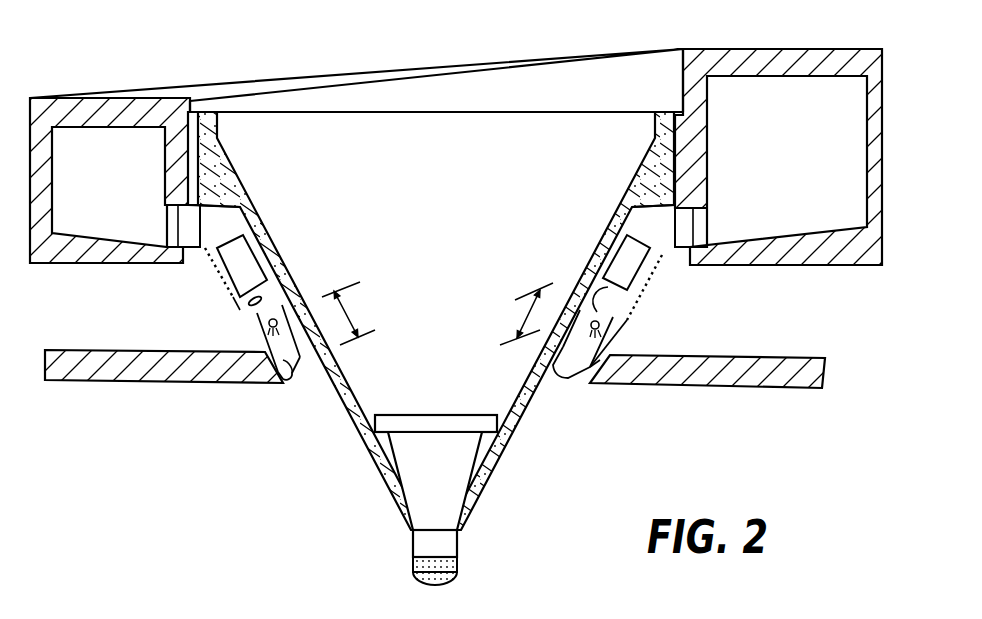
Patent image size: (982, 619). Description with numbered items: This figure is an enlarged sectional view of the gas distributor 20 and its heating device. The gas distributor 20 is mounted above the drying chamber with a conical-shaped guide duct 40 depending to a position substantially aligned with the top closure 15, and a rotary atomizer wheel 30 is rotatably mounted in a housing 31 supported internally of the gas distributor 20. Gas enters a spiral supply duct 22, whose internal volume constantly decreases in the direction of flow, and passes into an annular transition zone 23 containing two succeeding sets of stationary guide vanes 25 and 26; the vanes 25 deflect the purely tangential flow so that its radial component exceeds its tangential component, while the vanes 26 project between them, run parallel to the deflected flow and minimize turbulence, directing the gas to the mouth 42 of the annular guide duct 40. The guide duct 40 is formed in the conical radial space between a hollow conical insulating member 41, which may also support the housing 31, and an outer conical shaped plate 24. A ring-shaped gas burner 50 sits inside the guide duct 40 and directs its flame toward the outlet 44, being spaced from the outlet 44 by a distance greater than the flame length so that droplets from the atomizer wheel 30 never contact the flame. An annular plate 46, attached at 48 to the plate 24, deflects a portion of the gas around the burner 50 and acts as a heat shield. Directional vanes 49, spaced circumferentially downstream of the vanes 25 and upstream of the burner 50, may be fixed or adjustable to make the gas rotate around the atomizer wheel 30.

The top closure 15 is at (149, 382).
The gas distributor 20 is at (150, 97).
The spiral supply duct 22 is at (690, 49).
The annular transition zone 23 is at (712, 210).
The conical shaped plate 24 is at (637, 300).
The stationary guide vanes 25 is at (172, 230).
The stationary guide vanes 26 is at (190, 240).
The rotary atomizer wheel 30 is at (453, 570).
The housing 31 is at (443, 490).
The annular guide duct 40 is at (247, 312).
The insulating member 41 is at (262, 258).
The mouth 42 is at (218, 230).
The outlet 44 is at (578, 380).
The annular plate 46 is at (283, 362).
The attachment 48 is at (253, 326).
The directional vanes 49 is at (262, 270).
The gas burner 50 is at (322, 297).